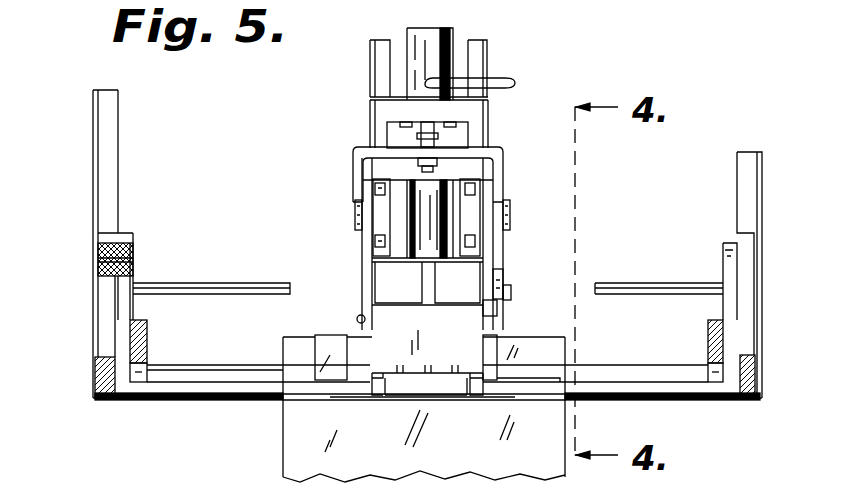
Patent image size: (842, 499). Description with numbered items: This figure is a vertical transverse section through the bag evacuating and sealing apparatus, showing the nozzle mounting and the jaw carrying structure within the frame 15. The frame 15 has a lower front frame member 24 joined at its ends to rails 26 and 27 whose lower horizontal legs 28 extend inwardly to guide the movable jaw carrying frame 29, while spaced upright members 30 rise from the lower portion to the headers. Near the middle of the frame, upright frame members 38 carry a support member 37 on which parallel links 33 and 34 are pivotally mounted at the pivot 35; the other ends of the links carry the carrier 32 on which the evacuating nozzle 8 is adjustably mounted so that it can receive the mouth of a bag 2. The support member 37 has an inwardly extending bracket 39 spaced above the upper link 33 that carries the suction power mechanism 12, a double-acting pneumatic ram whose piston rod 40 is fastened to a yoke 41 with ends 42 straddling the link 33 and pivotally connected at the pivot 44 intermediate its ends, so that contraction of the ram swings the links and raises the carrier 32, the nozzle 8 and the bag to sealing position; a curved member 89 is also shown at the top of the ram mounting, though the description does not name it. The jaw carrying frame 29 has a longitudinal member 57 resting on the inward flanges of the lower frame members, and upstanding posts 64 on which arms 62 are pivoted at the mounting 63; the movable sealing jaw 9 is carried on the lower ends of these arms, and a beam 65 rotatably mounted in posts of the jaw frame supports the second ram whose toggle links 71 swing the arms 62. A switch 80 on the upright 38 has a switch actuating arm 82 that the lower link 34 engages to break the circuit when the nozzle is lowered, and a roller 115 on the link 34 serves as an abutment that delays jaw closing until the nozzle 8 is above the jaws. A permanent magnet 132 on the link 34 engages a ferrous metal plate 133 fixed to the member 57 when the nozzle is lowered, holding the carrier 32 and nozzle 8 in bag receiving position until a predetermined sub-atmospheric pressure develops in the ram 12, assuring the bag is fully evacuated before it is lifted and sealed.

The bag 2 is at (283, 446).
The evacuating nozzle 8 is at (455, 312).
The sealing jaw 9 is at (228, 401).
The suction power mechanism 12 is at (450, 30).
The frame 15 is at (738, 196).
The front frame member 24 is at (345, 400).
The rail 26 is at (93, 393).
The rail 27 is at (756, 388).
The lower horizontal leg 28 is at (745, 400).
The jaw carrying frame 29 is at (95, 360).
The upright member 30 is at (115, 157).
The carrier 32 is at (410, 188).
The parallel link 33 is at (362, 205).
The parallel link 34 is at (366, 281).
The pivot 35 is at (500, 312).
The support member 37 is at (375, 126).
The upright frame member 38 is at (372, 62).
The bracket 39 is at (470, 108).
The piston rod 40 is at (426, 128).
The yoke 41 is at (490, 151).
The yoke ends 42 is at (500, 181).
The pivotal connection 44 is at (498, 213).
The longitudinal member 57 is at (505, 381).
The arm 62 is at (133, 308).
The pivotal mounting 63 is at (133, 256).
The upstanding post 64 is at (112, 299).
The beam 65 is at (218, 287).
The toggle link 71 is at (150, 345).
The electrical switch 80 is at (320, 350).
The switch actuating arm 82 is at (357, 320).
The handle 89 is at (505, 82).
The roller 115 is at (505, 286).
The permanent magnet 132 is at (511, 293).
The ferrous metal plate 133 is at (500, 339).